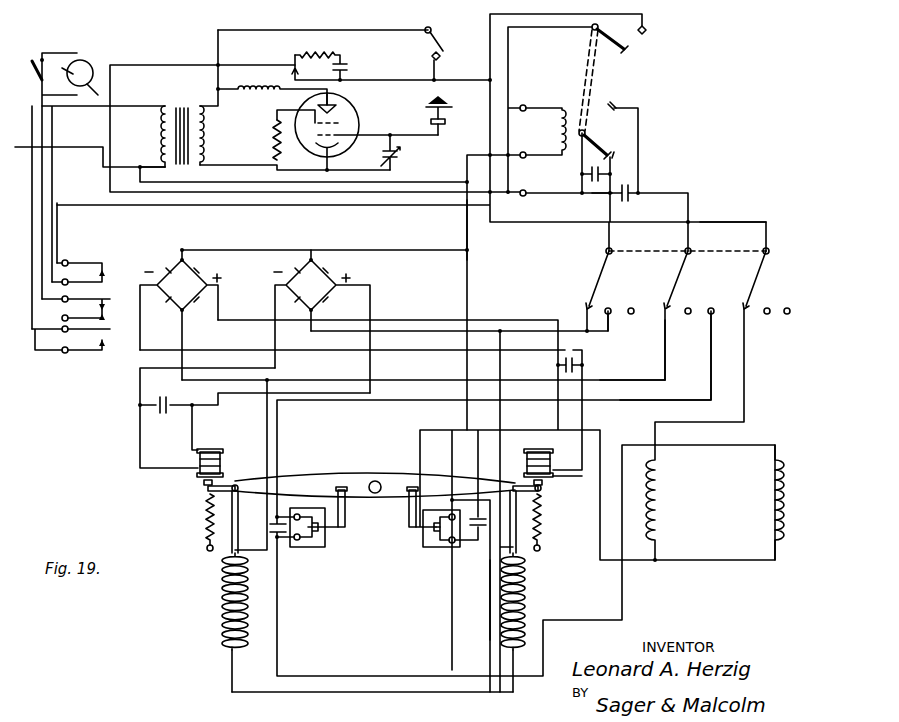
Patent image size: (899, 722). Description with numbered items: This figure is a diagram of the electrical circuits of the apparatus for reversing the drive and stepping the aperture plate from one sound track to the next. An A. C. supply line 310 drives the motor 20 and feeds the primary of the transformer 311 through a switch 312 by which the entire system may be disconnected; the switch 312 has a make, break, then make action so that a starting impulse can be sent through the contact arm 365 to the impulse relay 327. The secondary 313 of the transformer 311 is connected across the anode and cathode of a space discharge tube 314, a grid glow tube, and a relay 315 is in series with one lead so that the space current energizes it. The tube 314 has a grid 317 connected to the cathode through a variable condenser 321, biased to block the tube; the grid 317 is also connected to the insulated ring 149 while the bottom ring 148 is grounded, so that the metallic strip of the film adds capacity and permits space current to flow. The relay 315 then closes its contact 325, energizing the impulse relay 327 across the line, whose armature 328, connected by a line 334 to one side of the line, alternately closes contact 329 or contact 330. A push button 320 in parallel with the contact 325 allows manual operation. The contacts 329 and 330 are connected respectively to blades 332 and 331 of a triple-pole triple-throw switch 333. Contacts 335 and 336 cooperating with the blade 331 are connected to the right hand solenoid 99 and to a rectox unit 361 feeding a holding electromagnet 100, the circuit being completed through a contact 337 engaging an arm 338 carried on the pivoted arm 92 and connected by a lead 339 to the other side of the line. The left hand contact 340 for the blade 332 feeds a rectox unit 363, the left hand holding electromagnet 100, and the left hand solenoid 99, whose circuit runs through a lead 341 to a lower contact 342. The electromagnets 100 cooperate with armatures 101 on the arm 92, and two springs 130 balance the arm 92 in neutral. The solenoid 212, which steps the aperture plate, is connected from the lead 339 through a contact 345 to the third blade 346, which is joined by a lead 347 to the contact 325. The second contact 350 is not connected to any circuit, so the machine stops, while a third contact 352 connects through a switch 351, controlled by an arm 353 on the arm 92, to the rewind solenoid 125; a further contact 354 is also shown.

The motor 20 is at (93, 62).
The A. C. supply line 310 is at (30, 146).
The transformer 311 is at (167, 175).
The switch 312 is at (71, 297).
The secondary 313 is at (201, 136).
The space discharge tube 314 is at (345, 111).
The relay 315 is at (263, 98).
The grid 317 is at (340, 141).
The push button 320 is at (347, 53).
The variable condenser 321 is at (407, 152).
The contact 325 is at (321, 66).
The impulse relay 327 is at (546, 150).
The armature 328 is at (612, 131).
The contact 329 is at (614, 106).
The contact 330 is at (622, 155).
The blade 331 is at (490, 602).
The blade 332 is at (680, 268).
The triple-pole triple-throw switch 333 is at (741, 252).
The line 334 is at (545, 195).
The contact 335 is at (610, 302).
The contact 336 is at (610, 315).
The contact 337 is at (437, 516).
The arm 338 is at (410, 524).
The lead 339 is at (467, 232).
The contact 340 is at (666, 320).
The lead 341 is at (340, 693).
The contact 342 is at (441, 508).
The contact 345 is at (775, 302).
The third blade 346 is at (750, 300).
The lead 347 is at (743, 220).
The second contact 350 is at (692, 300).
The switch 351 is at (309, 537).
The third contact 352 is at (713, 307).
The arm 353 is at (345, 514).
The contact 354 is at (633, 308).
The rectox unit 361 is at (330, 270).
The rectox unit 363 is at (200, 272).
The contact arm 365 is at (630, 44).
The pivoted arm 92 is at (331, 478).
The solenoid 99 is at (386, 601).
The electromagnet 100 is at (390, 465).
The armature 101 is at (544, 489).
The rewind solenoid 125 is at (768, 506).
The spring 130 is at (545, 524).
The bottom ring 148 is at (436, 116).
The insulated ring 149 is at (446, 121).
The solenoid 212 is at (662, 512).